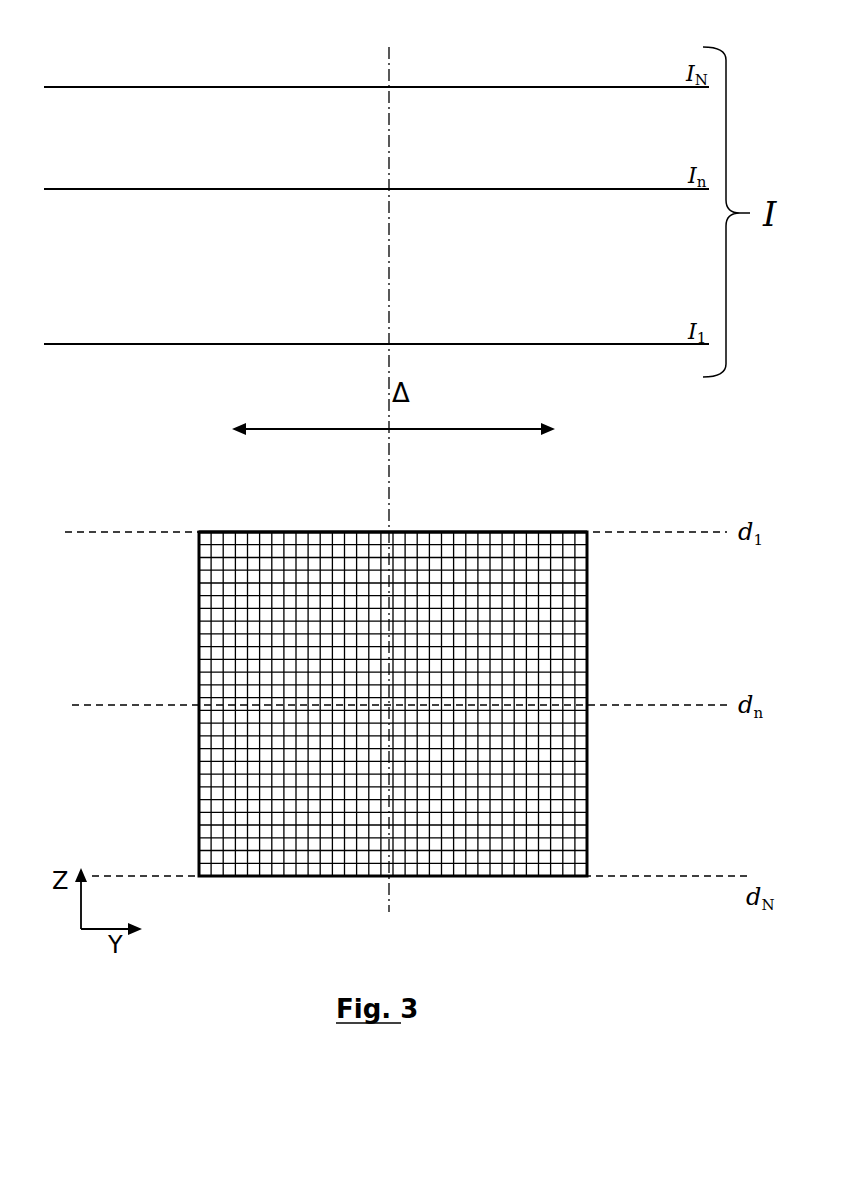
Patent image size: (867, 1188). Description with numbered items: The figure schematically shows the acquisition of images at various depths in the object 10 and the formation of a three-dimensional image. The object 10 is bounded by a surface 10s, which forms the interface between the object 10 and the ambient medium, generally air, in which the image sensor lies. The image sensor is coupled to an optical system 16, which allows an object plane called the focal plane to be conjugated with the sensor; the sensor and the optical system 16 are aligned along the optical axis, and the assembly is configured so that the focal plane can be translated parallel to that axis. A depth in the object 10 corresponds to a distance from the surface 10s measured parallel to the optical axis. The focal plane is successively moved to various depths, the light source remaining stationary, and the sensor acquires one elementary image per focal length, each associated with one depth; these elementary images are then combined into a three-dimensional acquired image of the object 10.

The object 10 is at (587, 531).
The surface 10s is at (259, 532).
The optical system 16 is at (500, 429).